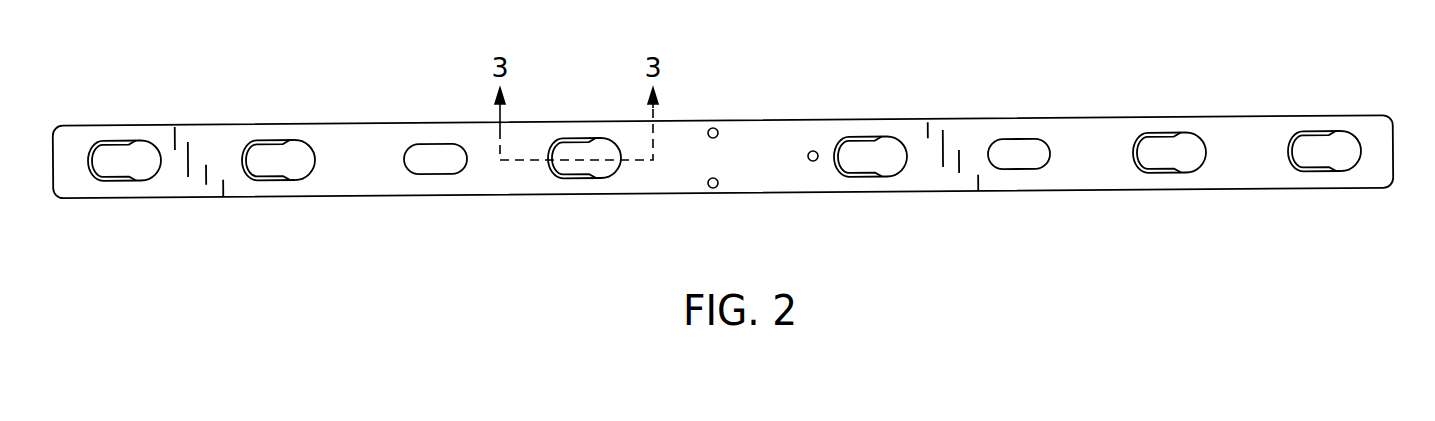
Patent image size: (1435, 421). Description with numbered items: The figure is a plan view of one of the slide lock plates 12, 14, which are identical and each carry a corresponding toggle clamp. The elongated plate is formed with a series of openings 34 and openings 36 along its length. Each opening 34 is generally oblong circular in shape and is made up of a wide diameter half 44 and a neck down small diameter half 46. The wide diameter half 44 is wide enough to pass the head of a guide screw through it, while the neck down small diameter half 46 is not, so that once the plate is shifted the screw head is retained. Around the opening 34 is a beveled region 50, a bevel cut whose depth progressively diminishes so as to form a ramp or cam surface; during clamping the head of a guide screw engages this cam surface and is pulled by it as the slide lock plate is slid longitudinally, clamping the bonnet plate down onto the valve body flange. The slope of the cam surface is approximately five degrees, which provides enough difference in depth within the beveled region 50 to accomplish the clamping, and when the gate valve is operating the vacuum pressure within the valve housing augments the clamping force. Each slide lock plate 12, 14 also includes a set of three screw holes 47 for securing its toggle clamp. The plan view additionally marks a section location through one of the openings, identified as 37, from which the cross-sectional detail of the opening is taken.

The slide lock plate 12 is at (965, 120).
The slide lock plate 14 is at (723, 111).
The opening 34 is at (747, 145).
The opening 36 is at (437, 167).
The keyhole slot (sectioned) 37 is at (591, 139).
The wide diameter half 44 is at (312, 177).
The neck down small diameter half 46 is at (242, 177).
The screw holes 47 is at (718, 183).
The beveled region 50 is at (272, 177).